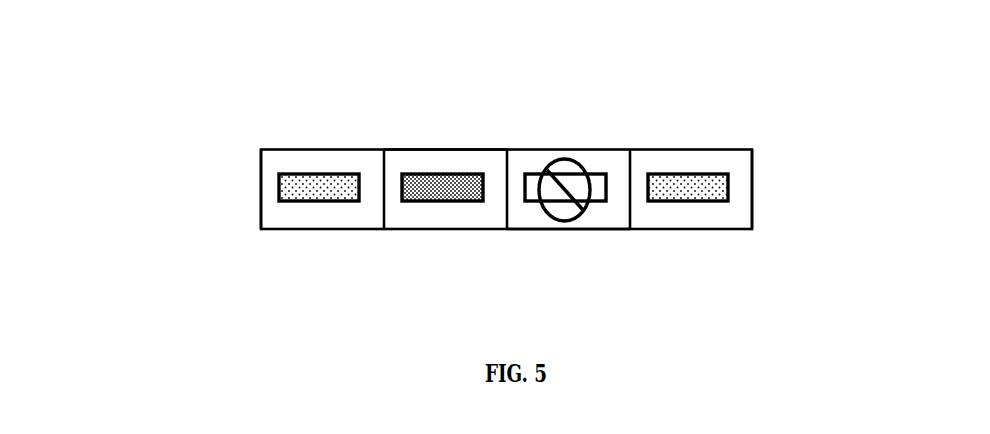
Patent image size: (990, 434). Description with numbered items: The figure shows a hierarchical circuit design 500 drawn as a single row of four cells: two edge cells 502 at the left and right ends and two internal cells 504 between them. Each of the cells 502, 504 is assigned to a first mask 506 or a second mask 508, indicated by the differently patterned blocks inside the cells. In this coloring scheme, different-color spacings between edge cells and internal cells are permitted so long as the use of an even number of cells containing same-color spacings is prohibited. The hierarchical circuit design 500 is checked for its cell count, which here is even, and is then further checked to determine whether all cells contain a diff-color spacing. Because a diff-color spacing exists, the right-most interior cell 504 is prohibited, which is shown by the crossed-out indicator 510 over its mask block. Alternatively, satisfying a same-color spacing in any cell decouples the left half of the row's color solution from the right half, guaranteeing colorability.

The hierarchical circuit design 500 is at (132, 68).
The edge cell 502 is at (792, 177).
The internal cell 504 is at (582, 268).
The first mask 506 is at (296, 187).
The second mask 508 is at (423, 187).
The prohibited / removed feature indicator 510 is at (554, 146).